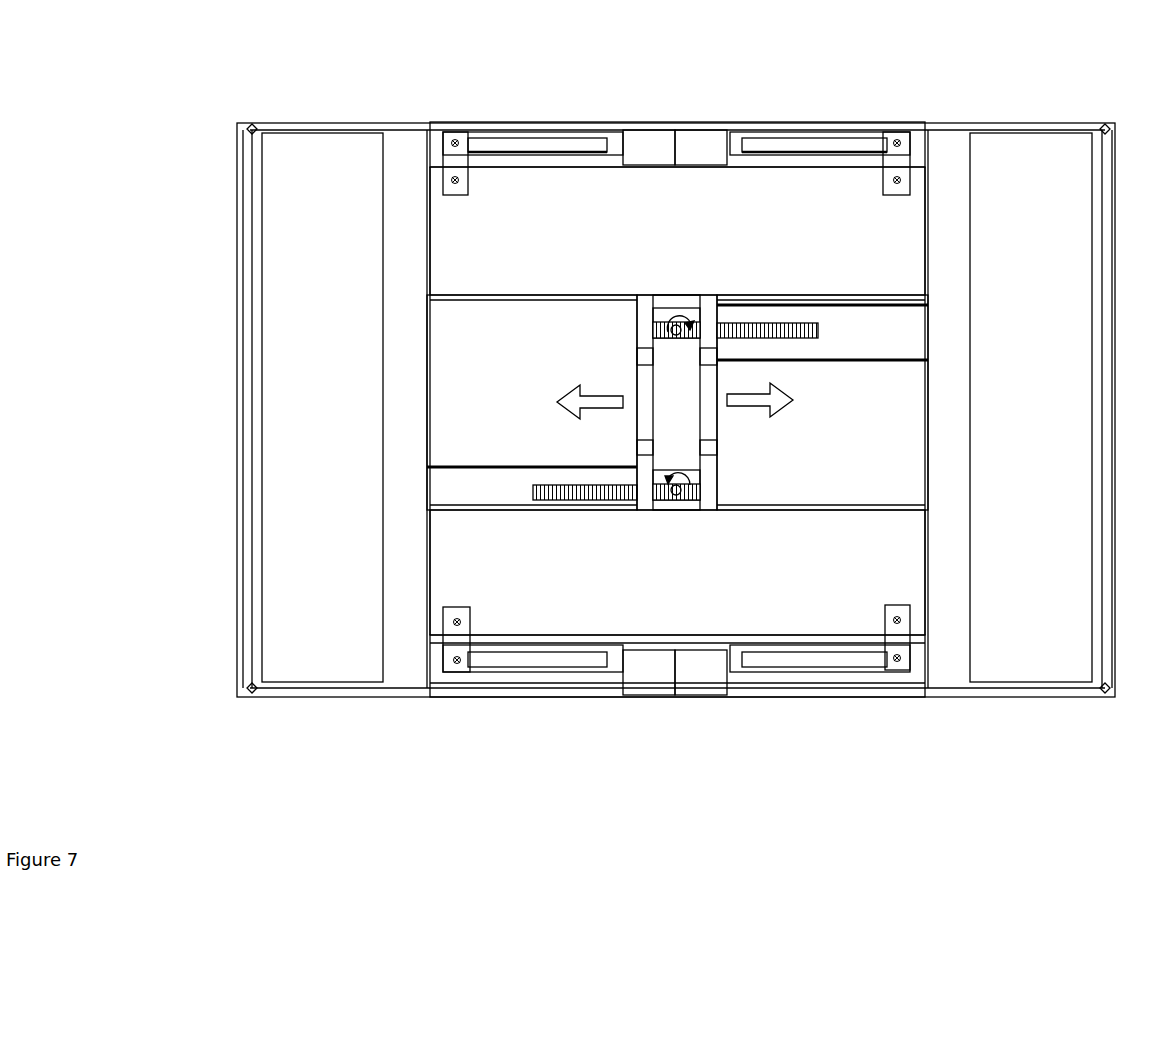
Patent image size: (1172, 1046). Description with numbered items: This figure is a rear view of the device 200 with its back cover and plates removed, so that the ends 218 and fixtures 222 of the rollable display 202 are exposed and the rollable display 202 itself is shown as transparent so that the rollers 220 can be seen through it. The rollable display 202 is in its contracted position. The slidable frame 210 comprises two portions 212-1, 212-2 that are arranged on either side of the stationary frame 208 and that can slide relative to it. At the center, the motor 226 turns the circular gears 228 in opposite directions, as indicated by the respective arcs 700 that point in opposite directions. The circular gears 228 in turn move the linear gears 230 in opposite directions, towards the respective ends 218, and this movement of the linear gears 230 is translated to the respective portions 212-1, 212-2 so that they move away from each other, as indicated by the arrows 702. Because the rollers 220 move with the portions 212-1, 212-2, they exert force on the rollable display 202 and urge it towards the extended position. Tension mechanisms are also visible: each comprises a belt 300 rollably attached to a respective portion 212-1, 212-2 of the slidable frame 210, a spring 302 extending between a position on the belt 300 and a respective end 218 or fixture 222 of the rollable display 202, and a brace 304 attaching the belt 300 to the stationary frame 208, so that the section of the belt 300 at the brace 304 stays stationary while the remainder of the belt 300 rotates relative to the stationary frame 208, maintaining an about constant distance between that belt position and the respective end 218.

The device 200 is at (1112, 46).
The rollable display 202 is at (336, 462).
The stationary frame 208 is at (710, 245).
The slidable frame 210 is at (945, 124).
The portion of the slidable frame 212-1 is at (520, 355).
The portion of the slidable frame 212-2 is at (892, 468).
The end of the rollable display 218 is at (383, 352).
The roller 220 is at (258, 128).
The fixture 222 is at (427, 220).
The motor 226 is at (699, 408).
The circular gear 228 is at (662, 330).
The linear gear 230 is at (818, 332).
The belt 300 is at (585, 140).
The spring 302 is at (440, 135).
The brace 304 is at (460, 143).
The arc 700 is at (668, 318).
The arrow 702 is at (572, 398).